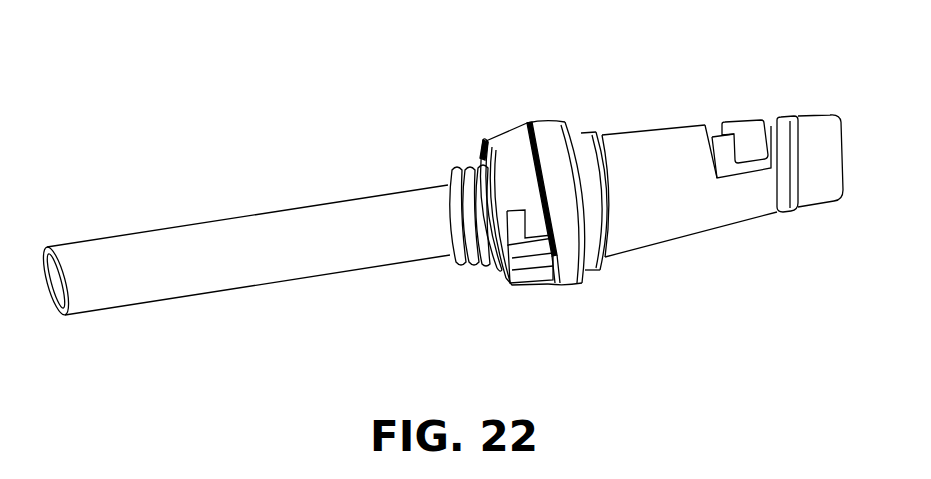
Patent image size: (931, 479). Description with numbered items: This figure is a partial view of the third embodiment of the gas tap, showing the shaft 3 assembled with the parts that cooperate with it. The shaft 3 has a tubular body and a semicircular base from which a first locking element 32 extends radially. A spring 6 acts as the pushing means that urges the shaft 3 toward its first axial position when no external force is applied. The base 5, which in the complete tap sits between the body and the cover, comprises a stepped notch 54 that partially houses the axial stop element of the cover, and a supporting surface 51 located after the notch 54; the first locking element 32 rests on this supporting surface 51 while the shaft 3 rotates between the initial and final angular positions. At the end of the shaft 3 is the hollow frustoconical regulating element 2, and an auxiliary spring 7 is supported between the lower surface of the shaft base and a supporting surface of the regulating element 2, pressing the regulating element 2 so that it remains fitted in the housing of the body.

The regulating element 2 is at (805, 162).
The shaft 3 is at (362, 226).
The base 5 is at (548, 132).
The spring 6 is at (478, 162).
The auxiliary spring 7 is at (605, 258).
The first locking element 32 is at (497, 253).
The supporting surface 51 is at (483, 140).
The stepped notch 54 is at (543, 281).